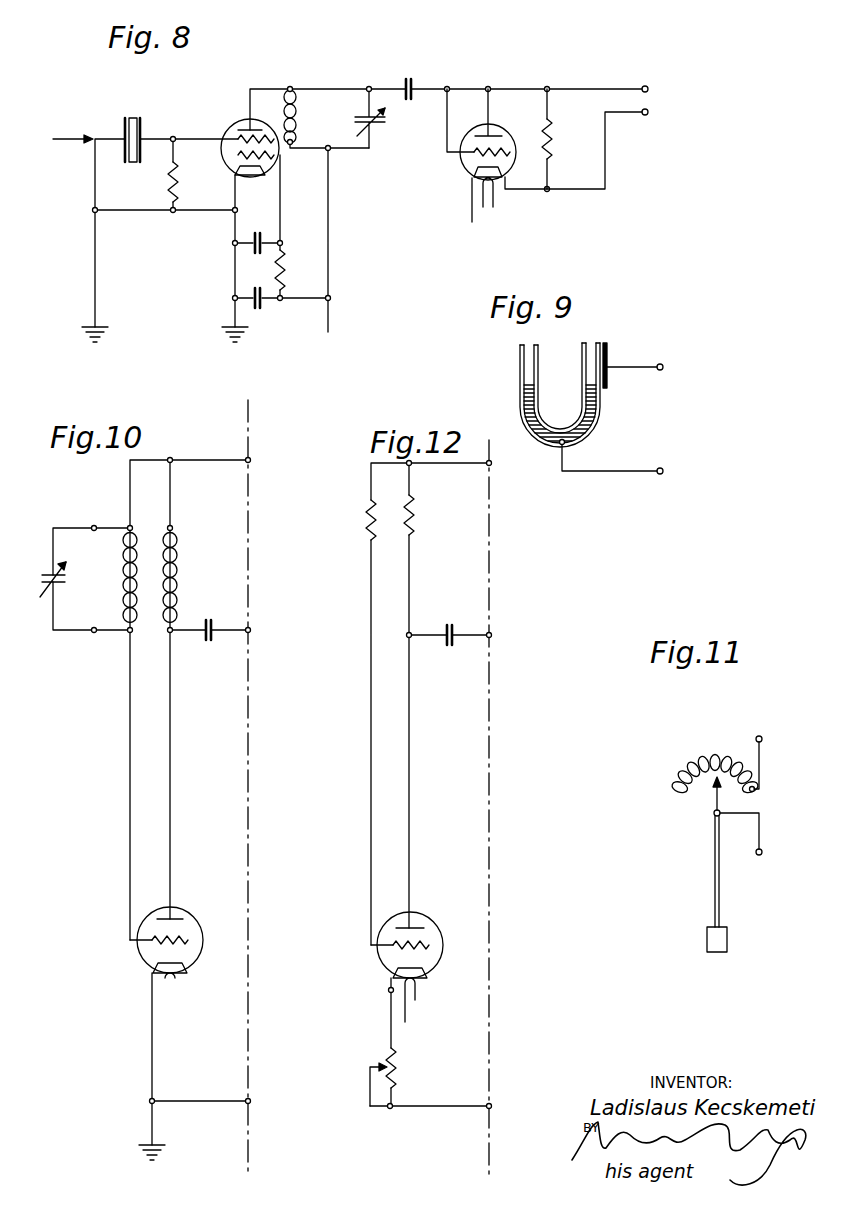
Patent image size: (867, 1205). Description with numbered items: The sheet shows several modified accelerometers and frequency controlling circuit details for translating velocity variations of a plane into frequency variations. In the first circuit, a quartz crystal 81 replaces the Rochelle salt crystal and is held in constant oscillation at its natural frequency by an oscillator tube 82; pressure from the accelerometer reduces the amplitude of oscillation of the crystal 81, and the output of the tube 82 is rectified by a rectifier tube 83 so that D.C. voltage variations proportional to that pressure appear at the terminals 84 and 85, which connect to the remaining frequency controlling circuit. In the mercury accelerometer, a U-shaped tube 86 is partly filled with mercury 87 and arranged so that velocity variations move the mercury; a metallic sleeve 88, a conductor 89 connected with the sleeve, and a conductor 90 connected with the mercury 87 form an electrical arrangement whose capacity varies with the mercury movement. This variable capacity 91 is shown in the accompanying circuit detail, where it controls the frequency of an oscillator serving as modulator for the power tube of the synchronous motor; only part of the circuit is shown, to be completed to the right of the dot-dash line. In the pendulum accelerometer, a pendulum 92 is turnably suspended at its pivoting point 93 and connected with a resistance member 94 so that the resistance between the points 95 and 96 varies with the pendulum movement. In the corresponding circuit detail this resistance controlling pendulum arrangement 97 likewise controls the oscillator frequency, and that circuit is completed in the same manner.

In FIG. 8, the quartz crystal 81 is at (131, 126).
In FIG. 8, the oscillator tube 82 is at (239, 123).
In FIG. 8, the rectifier tube 83 is at (501, 137).
In FIG. 8, the terminal 84 is at (648, 89).
In FIG. 8, the terminal 85 is at (648, 112).
In FIG. 9, the U-shaped tube 86 is at (522, 360).
In FIG. 9, the mercury 87 is at (532, 395).
In FIG. 9, the metallic sleeve 88 is at (608, 349).
In FIG. 9, the conductor 89 is at (640, 370).
In FIG. 10, the conductor 89 is at (75, 518).
In FIG. 9, the conductor 90 is at (590, 473).
In FIG. 10, the conductor 90 is at (65, 632).
In FIG. 10, the variable capacity 91 is at (52, 589).
In FIG. 11, the pendulum 92 is at (710, 940).
In FIG. 11, the pivoting point 93 is at (714, 816).
In FIG. 11, the resistance member 94 is at (715, 765).
In FIG. 12, the point 95 is at (387, 993).
In FIG. 11, the point 95 is at (762, 739).
In FIG. 12, the point 96 is at (390, 1110).
In FIG. 11, the point 96 is at (762, 852).
In FIG. 12, the resistance controlling pendulum arrangement 97 is at (397, 1071).